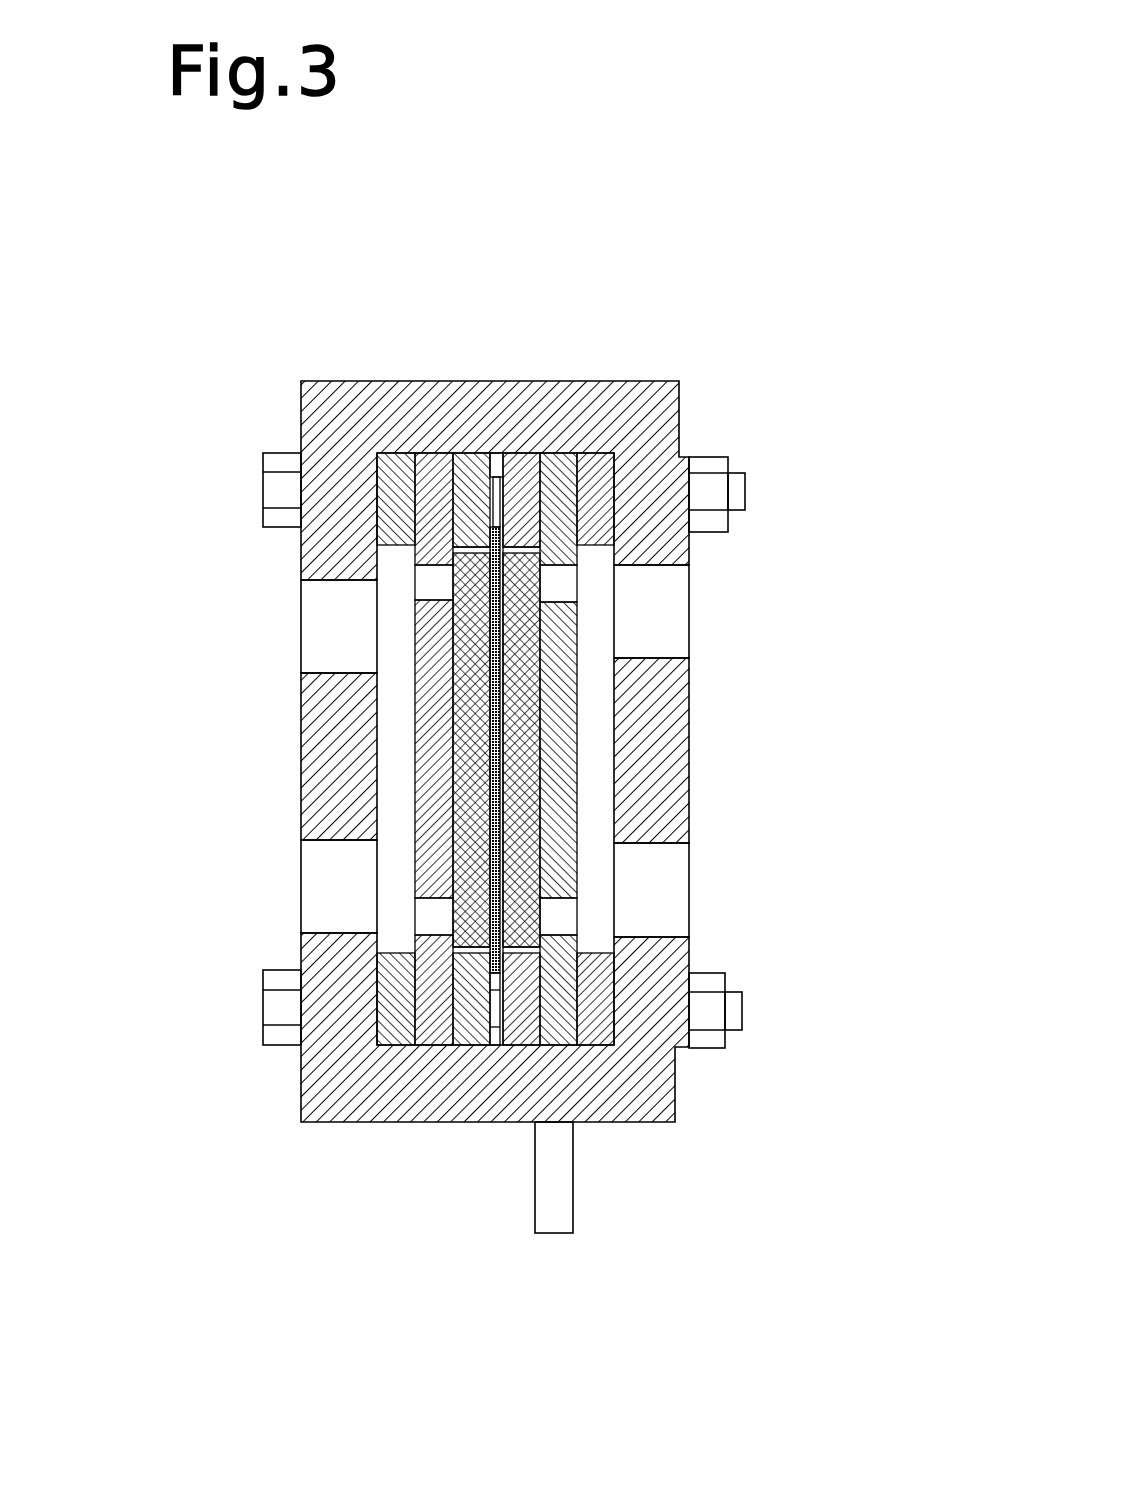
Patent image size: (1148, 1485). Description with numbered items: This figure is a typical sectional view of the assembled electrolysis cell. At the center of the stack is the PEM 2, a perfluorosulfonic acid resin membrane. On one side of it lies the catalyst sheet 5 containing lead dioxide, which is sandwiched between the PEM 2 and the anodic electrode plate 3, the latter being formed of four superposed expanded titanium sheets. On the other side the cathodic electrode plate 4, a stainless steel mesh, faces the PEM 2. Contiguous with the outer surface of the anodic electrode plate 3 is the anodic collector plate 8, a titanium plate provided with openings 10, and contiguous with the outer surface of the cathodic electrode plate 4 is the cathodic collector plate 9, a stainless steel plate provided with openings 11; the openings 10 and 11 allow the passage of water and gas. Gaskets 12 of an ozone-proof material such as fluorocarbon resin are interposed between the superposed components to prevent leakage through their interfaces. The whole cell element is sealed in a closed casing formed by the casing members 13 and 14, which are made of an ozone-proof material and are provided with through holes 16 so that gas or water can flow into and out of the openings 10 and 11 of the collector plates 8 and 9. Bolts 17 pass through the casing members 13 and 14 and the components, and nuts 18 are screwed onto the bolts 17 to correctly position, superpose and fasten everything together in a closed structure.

The PEM 2 is at (494, 490).
The anodic electrode plate 3 is at (527, 500).
The cathodic electrode plate 4 is at (466, 525).
The catalyst sheet 5 is at (506, 535).
The anodic collector plate 8 is at (553, 710).
The cathodic collector plate 9 is at (417, 717).
The openings 10 is at (568, 590).
The openings 11 is at (417, 582).
The gaskets 12 is at (397, 470).
The casing member 13 is at (673, 752).
The casing member 14 is at (317, 795).
The through holes 16 is at (317, 650).
The bolts 17 is at (262, 497).
The nuts 18 is at (713, 463).